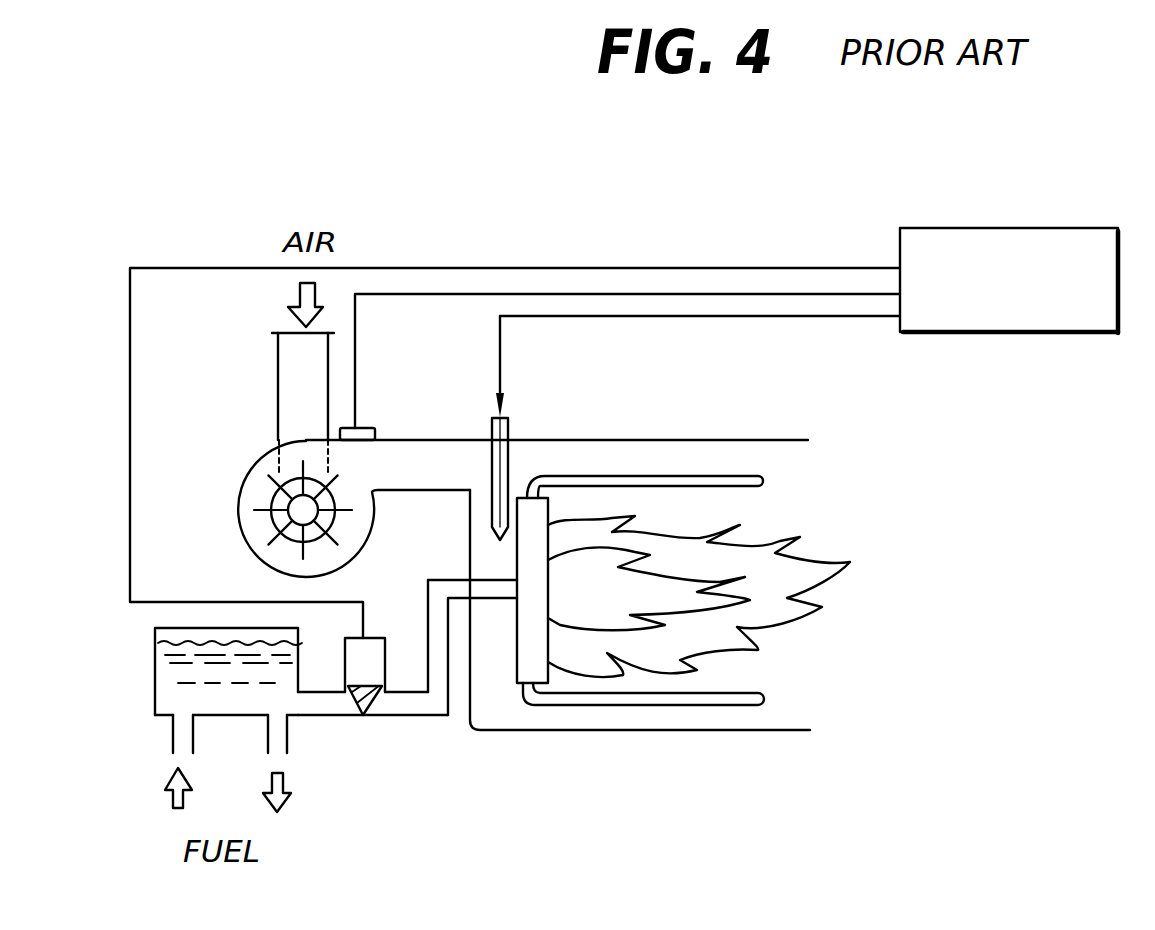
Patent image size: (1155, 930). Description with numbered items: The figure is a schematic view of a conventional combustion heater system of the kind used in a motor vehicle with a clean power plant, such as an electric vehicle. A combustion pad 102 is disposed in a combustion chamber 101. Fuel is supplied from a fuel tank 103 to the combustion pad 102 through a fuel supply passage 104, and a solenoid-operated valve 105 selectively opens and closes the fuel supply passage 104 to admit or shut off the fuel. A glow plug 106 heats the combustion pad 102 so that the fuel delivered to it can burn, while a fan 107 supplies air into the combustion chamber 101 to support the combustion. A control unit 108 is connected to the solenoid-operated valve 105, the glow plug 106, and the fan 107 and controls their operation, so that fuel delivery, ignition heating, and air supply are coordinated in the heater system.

The combustion chamber 101 is at (700, 720).
The combustion pad 102 is at (530, 660).
The fuel tank 103 is at (155, 682).
The fuel supply passage 104 is at (423, 703).
The solenoid-operated valve 105 is at (349, 716).
The glow plug 106 is at (510, 461).
The fan 107 is at (247, 478).
The control unit 108 is at (1011, 228).